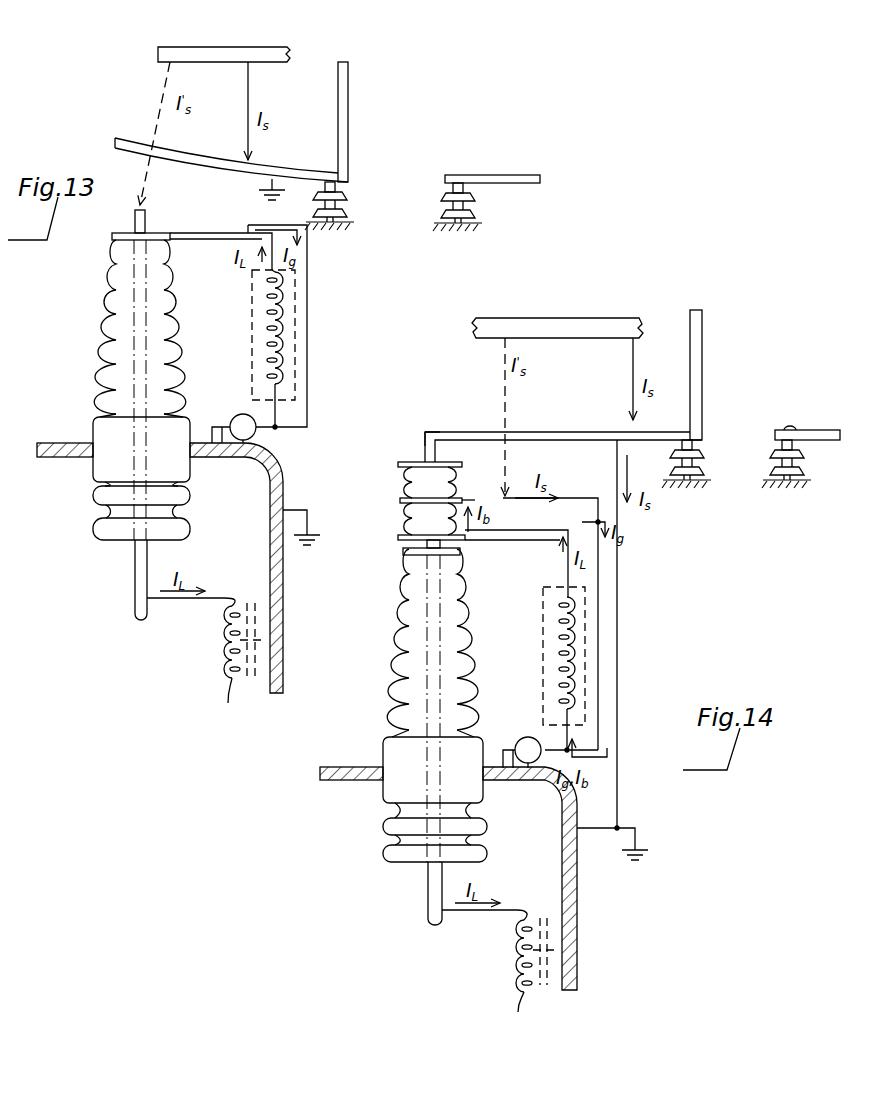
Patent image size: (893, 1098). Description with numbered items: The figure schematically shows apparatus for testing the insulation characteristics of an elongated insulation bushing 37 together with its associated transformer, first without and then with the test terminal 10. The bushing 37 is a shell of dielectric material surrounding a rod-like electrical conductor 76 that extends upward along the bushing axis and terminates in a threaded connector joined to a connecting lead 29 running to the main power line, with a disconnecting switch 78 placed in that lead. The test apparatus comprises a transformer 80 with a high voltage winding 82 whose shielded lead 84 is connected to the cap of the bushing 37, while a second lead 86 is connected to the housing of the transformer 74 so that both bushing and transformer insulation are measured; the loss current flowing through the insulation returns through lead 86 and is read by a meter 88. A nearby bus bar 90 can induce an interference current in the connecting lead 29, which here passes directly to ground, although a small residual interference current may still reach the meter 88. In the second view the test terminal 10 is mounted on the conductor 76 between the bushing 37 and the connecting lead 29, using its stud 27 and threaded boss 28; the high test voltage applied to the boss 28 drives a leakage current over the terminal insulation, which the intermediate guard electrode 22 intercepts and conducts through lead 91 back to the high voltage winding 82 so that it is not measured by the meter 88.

In FIG. 14, the test terminal 10 is at (392, 460).
In FIG. 14, the guard electrode 22 is at (464, 498).
In FIG. 14, the stud 27 is at (425, 440).
In FIG. 14, the threaded boss 28 is at (422, 546).
In FIG. 13, the connecting lead 29 is at (198, 145).
In FIG. 14, the connecting lead 29 is at (577, 418).
In FIG. 13, the insulation bushing 37 is at (103, 368).
In FIG. 14, the insulation bushing 37 is at (397, 637).
In FIG. 13, the transformer housing 74 is at (283, 475).
In FIG. 14, the transformer housing 74 is at (578, 891).
In FIG. 13, the rod-like electrical conductor 76 is at (135, 566).
In FIG. 14, the rod-like electrical conductor 76 is at (428, 898).
In FIG. 13, the disconnecting switch 78 is at (348, 100).
In FIG. 14, the disconnecting switch 78 is at (702, 371).
In FIG. 13, the test transformer 80 is at (252, 291).
In FIG. 14, the test transformer 80 is at (543, 604).
In FIG. 13, the high voltage winding 82 is at (268, 358).
In FIG. 14, the high voltage winding 82 is at (560, 632).
In FIG. 13, the shielded lead 84 is at (231, 222).
In FIG. 14, the shielded lead 84 is at (555, 519).
In FIG. 13, the second lead 86 is at (218, 457).
In FIG. 14, the second lead 86 is at (505, 750).
In FIG. 13, the meter 88 is at (243, 414).
In FIG. 14, the meter 88 is at (524, 765).
In FIG. 13, the bus bar 90 is at (258, 36).
In FIG. 14, the bus bar 90 is at (596, 298).
In FIG. 14, the lead to guard electrode 91 is at (597, 484).